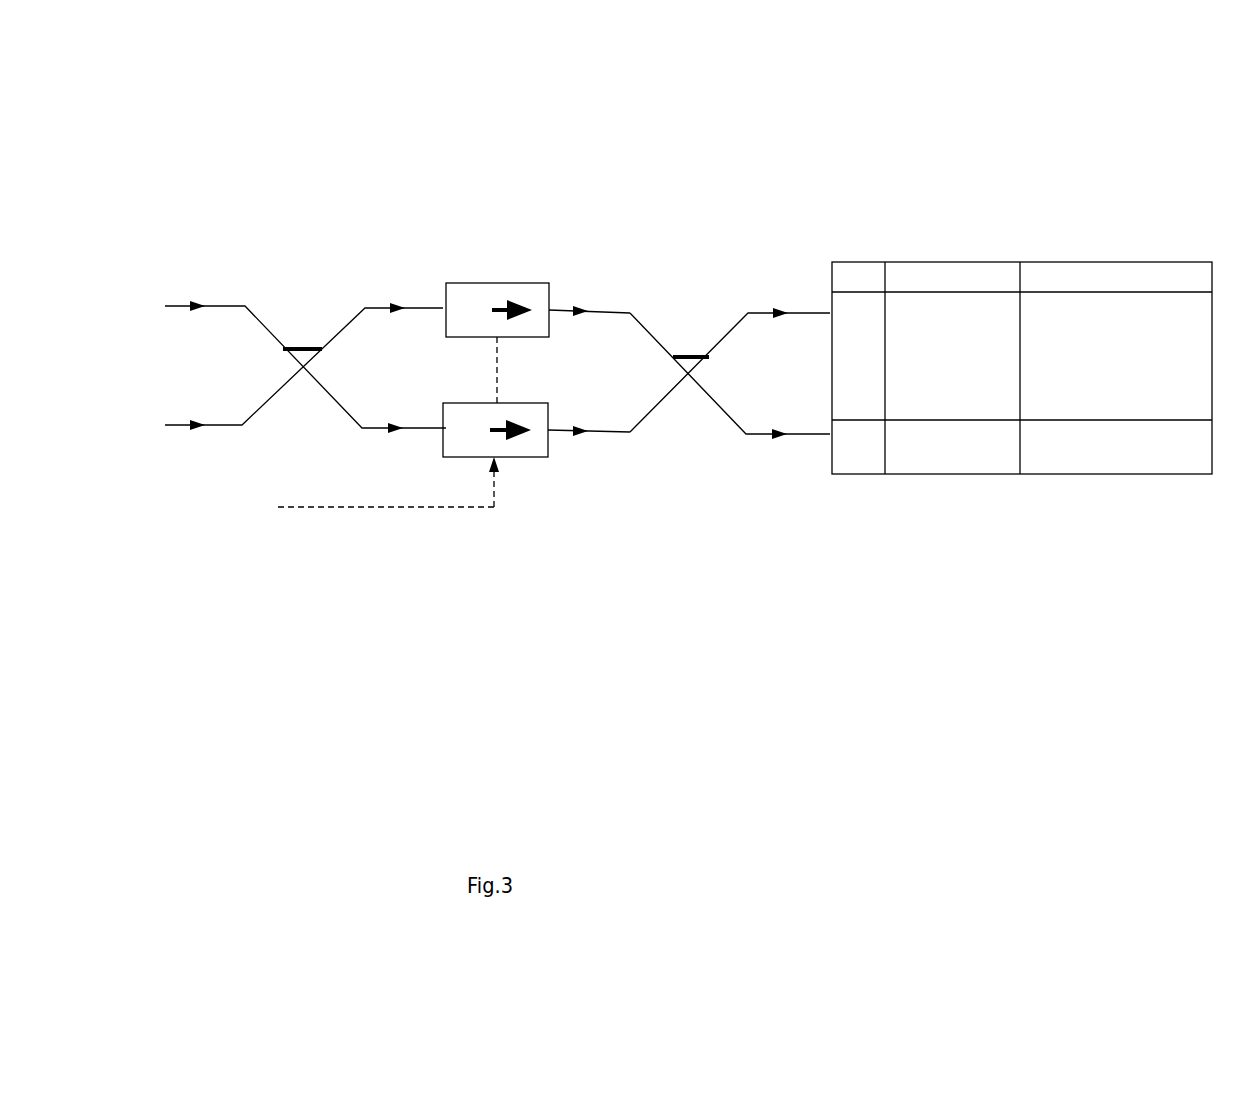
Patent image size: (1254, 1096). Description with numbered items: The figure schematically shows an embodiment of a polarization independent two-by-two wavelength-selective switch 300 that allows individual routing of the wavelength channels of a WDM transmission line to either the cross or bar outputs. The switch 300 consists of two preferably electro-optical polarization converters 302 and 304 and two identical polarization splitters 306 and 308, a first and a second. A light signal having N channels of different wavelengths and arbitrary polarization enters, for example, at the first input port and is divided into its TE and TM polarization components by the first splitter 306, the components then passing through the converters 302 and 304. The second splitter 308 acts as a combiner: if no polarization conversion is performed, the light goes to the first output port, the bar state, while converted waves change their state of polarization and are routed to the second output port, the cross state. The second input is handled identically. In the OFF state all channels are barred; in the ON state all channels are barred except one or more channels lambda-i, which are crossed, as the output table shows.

The polarization independent 2×2 wavelength-selective switch 300 is at (499, 722).
The polarization converter 302 is at (503, 268).
The polarization converter 304 is at (561, 382).
The first polarization splitter 306 is at (326, 416).
The second polarization splitter 308 is at (666, 434).